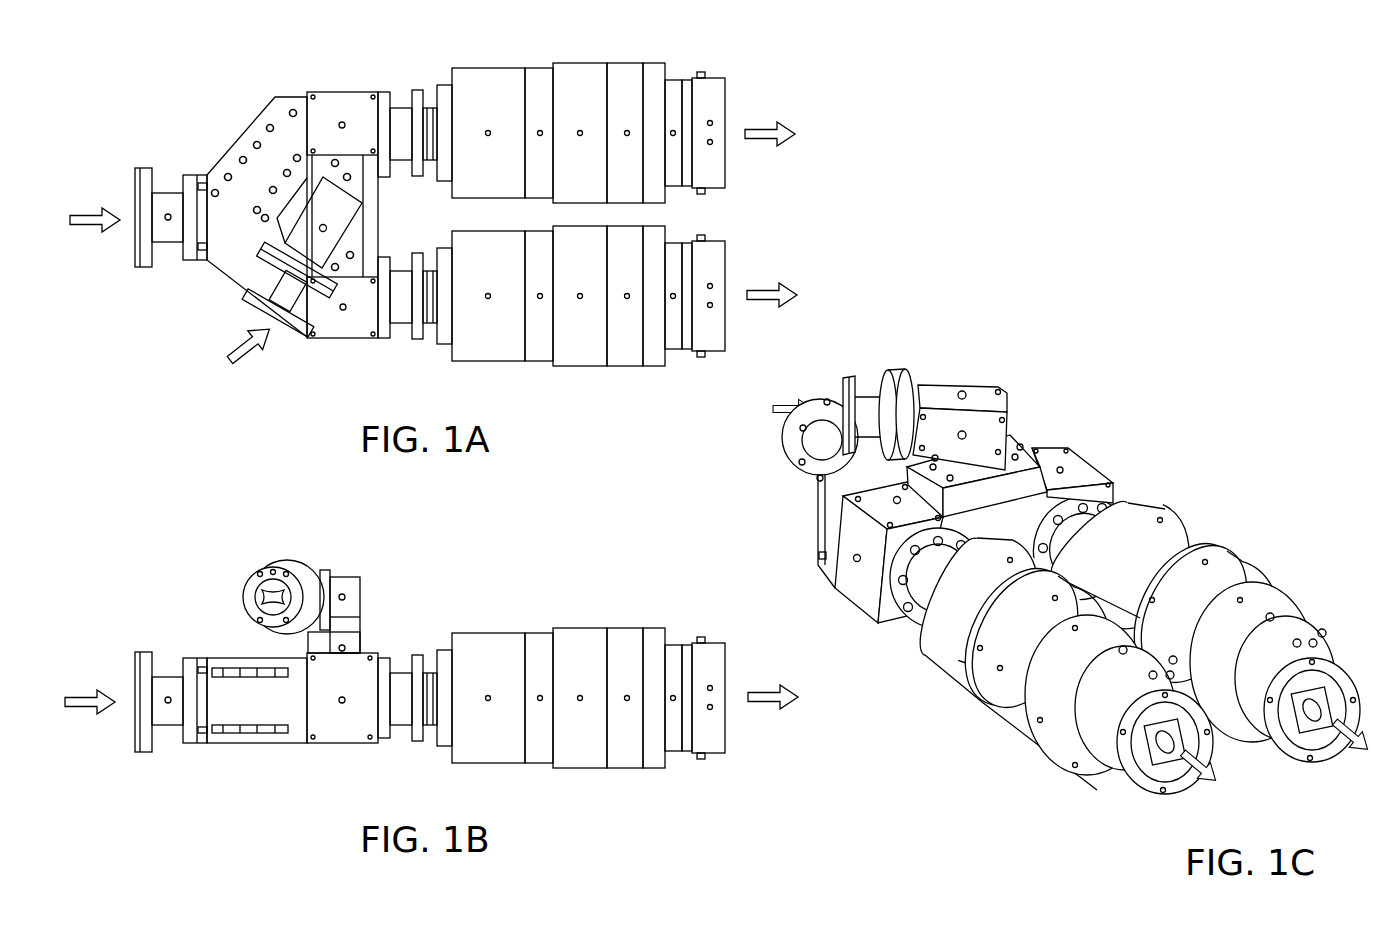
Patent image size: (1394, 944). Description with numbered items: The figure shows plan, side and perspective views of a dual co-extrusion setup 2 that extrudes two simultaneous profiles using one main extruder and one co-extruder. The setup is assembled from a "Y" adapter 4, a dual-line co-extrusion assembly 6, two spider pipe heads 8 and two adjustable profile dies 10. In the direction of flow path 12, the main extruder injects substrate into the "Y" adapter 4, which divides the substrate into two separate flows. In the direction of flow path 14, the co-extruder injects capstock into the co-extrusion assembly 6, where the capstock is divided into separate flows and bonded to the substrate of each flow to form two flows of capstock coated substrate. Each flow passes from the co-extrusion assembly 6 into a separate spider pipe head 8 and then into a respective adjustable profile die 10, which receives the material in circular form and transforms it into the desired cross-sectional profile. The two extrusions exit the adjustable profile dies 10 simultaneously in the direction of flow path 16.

In FIG. 1A, the dual co-extrusion setup 2 is at (375, 63).
In FIG. 1B, the dual co-extrusion setup 2 is at (298, 790).
In FIG. 1C, the dual co-extrusion setup 2 is at (1088, 421).
In FIG. 1A, the "Y" adapter 4 is at (257, 167).
In FIG. 1B, the "Y" adapter 4 is at (242, 715).
In FIG. 1C, the "Y" adapter 4 is at (837, 485).
In FIG. 1A, the dual-line co-extrusion assembly 6 is at (352, 332).
In FIG. 1B, the dual-line co-extrusion assembly 6 is at (358, 588).
In FIG. 1C, the dual-line co-extrusion assembly 6 is at (843, 587).
In FIG. 1A, the spider pipe head 8 is at (578, 70).
In FIG. 1B, the spider pipe head 8 is at (622, 753).
In FIG. 1C, the spider pipe head 8 is at (1238, 563).
In FIG. 1A, the adjustable profile die 10 is at (715, 162).
In FIG. 1B, the adjustable profile die 10 is at (720, 745).
In FIG. 1C, the adjustable profile die 10 is at (1270, 768).
In FIG. 1A, the flow path 12 is at (92, 230).
In FIG. 1B, the flow path 12 is at (68, 693).
In FIG. 1A, the flow path 14 is at (243, 367).
In FIG. 1B, the flow path 14 is at (248, 585).
In FIG. 1C, the flow path 14 is at (773, 409).
In FIG. 1A, the flow path 16 is at (750, 122).
In FIG. 1B, the flow path 16 is at (757, 687).
In FIG. 1C, the flow path 16 is at (1355, 752).